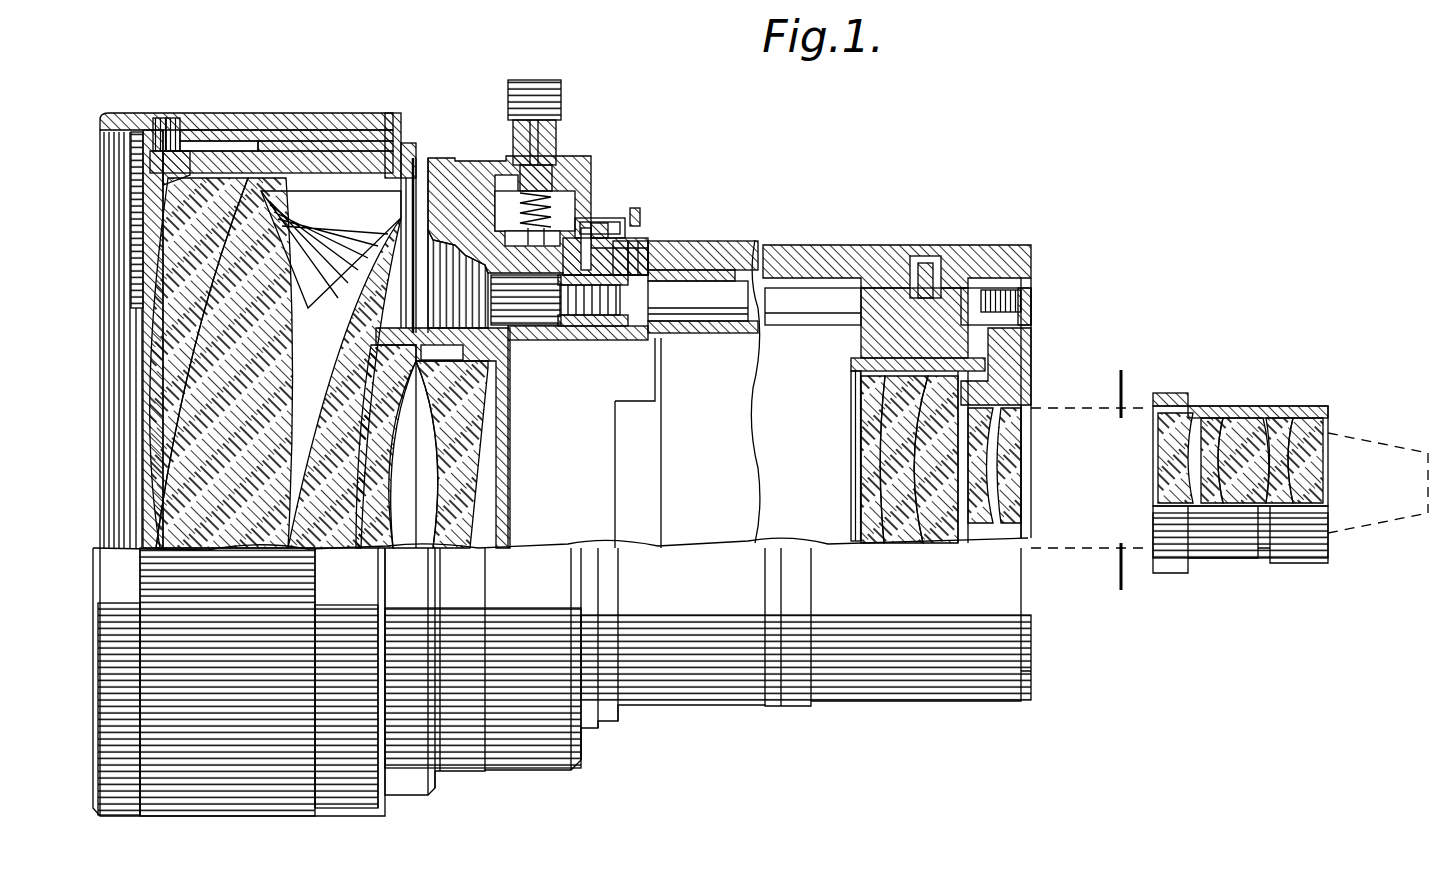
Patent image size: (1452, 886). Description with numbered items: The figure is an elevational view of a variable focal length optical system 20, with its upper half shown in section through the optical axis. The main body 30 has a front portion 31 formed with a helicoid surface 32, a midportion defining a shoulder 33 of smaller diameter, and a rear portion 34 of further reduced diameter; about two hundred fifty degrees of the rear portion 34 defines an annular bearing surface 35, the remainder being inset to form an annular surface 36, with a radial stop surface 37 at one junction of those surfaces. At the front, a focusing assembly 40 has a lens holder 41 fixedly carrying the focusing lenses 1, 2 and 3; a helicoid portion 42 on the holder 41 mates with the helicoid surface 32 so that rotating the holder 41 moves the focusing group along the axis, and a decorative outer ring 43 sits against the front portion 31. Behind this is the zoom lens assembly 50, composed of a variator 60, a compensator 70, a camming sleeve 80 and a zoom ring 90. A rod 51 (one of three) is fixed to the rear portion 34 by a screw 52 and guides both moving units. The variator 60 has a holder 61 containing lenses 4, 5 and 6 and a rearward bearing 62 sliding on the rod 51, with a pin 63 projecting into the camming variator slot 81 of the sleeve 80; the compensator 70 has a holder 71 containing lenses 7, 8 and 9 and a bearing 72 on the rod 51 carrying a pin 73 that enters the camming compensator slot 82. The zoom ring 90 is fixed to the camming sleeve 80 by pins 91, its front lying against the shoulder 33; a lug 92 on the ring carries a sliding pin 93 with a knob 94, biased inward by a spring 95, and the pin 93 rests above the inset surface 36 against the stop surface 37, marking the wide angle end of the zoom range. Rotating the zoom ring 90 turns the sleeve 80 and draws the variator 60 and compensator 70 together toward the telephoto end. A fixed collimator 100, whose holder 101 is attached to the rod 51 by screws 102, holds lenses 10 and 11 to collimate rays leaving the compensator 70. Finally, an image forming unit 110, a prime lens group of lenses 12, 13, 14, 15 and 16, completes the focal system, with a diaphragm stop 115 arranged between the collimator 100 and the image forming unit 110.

The lens 1 is at (150, 263).
The lens 2 is at (265, 332).
The lens 3 is at (320, 348).
The lens 4 is at (368, 415).
The lens 5 is at (430, 415).
The lens 6 is at (465, 493).
The lens 7 is at (862, 400).
The lens 8 is at (870, 437).
The lens 9 is at (850, 468).
The lens 10 is at (1000, 465).
The lens 11 is at (1005, 440).
The lens 12 is at (1162, 475).
The lens 13 is at (1205, 410).
The lens 14 is at (1250, 410).
The lens 15 is at (1288, 412).
The lens 16 is at (1305, 460).
The variable focal length optical system 20 is at (950, 138).
The main body 30 is at (405, 135).
The front portion 31 is at (310, 125).
The helicoid surface 32 is at (375, 100).
The shoulder 33 is at (462, 160).
The rear portion 34 is at (632, 233).
The annular bearing surface 35 is at (562, 222).
The annular surface 36 is at (608, 210).
The radial stop surface 37 is at (590, 215).
The focusing assembly 40 is at (236, 108).
The lens barrel or holder 41 is at (155, 112).
The helicoid portion 42 is at (280, 133).
The decorative outer ring 43 is at (188, 114).
The zoom lens assembly 50 is at (745, 230).
The rod 51 is at (785, 282).
The screw 52 is at (580, 320).
The variator 60 is at (630, 330).
The barrel or holder 61 is at (495, 338).
The bearing 62 is at (708, 325).
The pin 63 is at (700, 240).
The compensator 70 is at (843, 383).
The barrel or holder 71 is at (845, 357).
The bearing 72 is at (853, 328).
The pin 73 is at (945, 280).
The camming sleeve 80 is at (845, 242).
The camming variator slot 81 is at (620, 248).
The camming compensator slot 82 is at (918, 250).
The zoom ring 90 is at (555, 160).
The pin 91 is at (628, 215).
The lug 92 is at (545, 110).
The pin 93 is at (510, 130).
The knob 94 is at (520, 72).
The spring 95 is at (545, 150).
The collimator 100 is at (1030, 360).
The barrel or holder 101 is at (1023, 377).
The screw 102 is at (1023, 297).
The image forming unit 110 is at (1218, 398).
The diaphragm stop 115 is at (1118, 365).